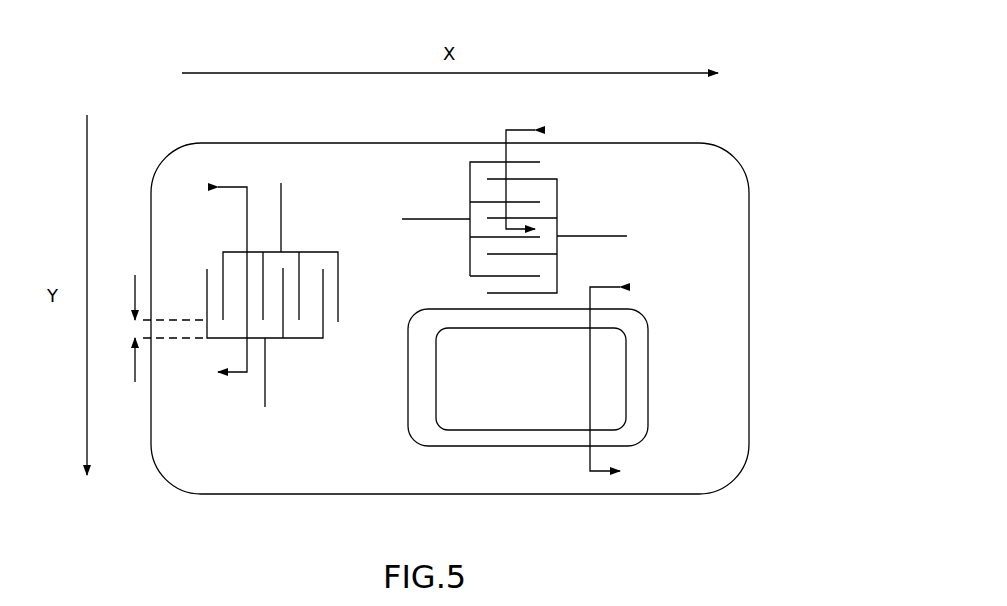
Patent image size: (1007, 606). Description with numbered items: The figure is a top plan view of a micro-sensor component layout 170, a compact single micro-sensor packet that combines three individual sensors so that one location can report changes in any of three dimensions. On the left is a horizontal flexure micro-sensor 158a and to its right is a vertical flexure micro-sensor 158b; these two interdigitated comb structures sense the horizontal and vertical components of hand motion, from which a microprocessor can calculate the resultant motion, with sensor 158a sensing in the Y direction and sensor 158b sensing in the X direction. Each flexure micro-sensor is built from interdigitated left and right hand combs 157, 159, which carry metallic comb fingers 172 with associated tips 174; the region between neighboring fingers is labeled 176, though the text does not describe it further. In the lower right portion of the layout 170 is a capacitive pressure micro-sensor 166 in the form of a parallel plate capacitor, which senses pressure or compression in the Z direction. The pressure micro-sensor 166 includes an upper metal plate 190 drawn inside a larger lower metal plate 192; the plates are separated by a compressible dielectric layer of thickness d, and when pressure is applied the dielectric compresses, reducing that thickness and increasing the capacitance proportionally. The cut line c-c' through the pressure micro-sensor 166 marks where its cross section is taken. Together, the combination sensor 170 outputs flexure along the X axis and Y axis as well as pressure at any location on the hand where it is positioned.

The micro-sensor component layout 170 is at (774, 93).
The horizontal flexure micro-sensor 158a is at (389, 263).
The vertical flexure micro-sensor 158b is at (450, 163).
The right hand comb 159 is at (283, 192).
The left hand comb 157 is at (267, 365).
The tips 174 is at (322, 268).
The gap between comb fingers 176 is at (320, 250).
The metallic comb fingers 172 is at (325, 327).
The capacitive pressure micro-sensor 166 is at (554, 379).
The upper metal plate 190 is at (502, 391).
The lower metal plate 192 is at (422, 427).